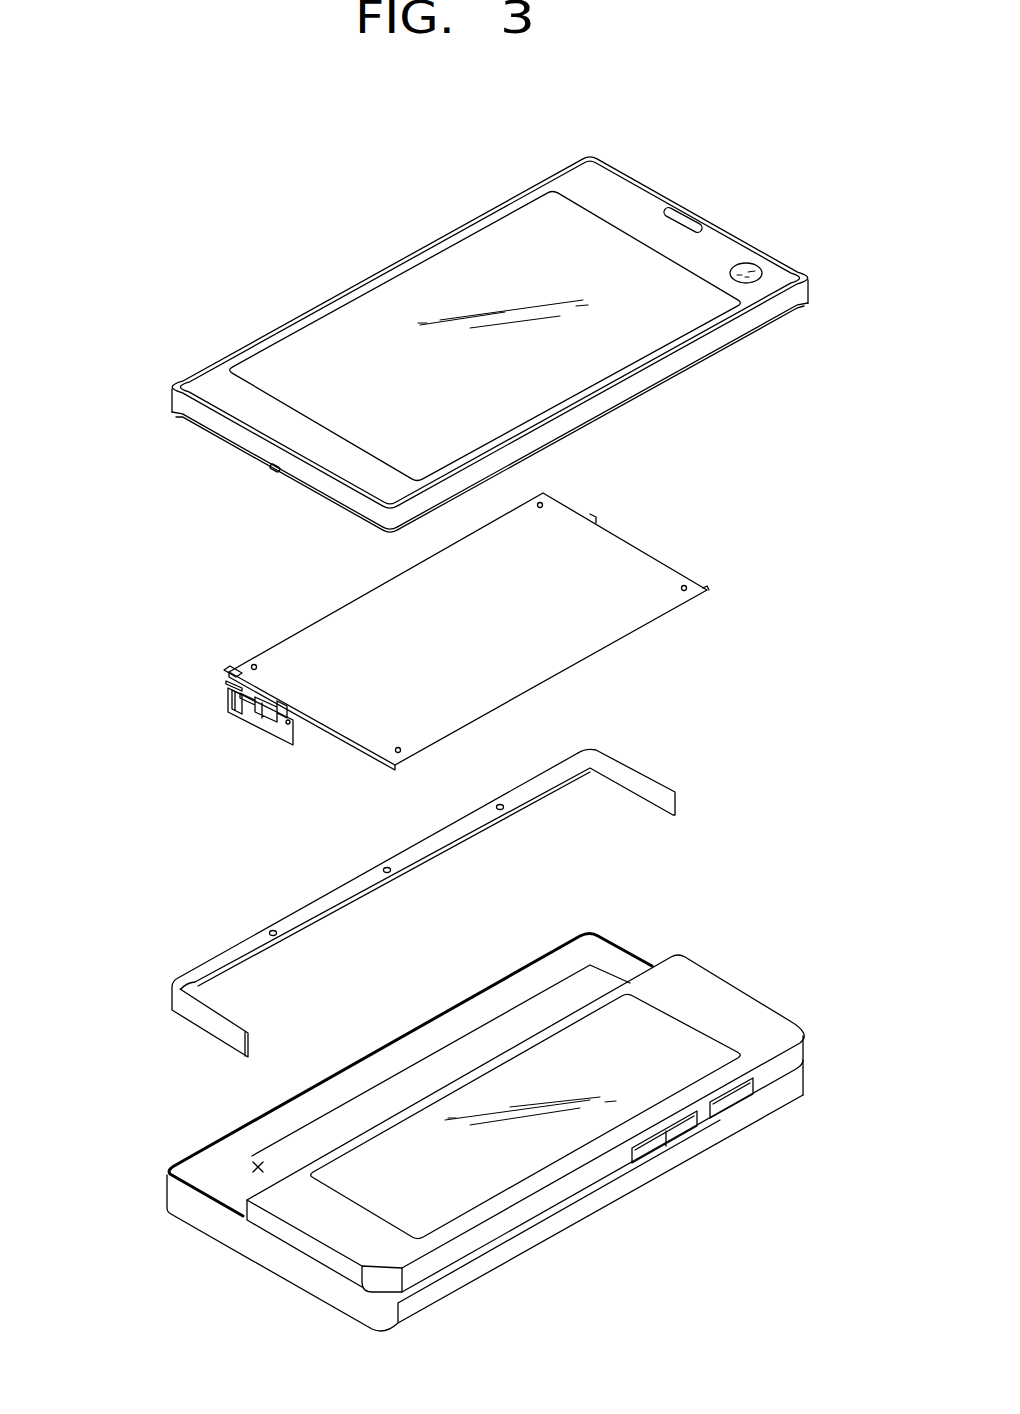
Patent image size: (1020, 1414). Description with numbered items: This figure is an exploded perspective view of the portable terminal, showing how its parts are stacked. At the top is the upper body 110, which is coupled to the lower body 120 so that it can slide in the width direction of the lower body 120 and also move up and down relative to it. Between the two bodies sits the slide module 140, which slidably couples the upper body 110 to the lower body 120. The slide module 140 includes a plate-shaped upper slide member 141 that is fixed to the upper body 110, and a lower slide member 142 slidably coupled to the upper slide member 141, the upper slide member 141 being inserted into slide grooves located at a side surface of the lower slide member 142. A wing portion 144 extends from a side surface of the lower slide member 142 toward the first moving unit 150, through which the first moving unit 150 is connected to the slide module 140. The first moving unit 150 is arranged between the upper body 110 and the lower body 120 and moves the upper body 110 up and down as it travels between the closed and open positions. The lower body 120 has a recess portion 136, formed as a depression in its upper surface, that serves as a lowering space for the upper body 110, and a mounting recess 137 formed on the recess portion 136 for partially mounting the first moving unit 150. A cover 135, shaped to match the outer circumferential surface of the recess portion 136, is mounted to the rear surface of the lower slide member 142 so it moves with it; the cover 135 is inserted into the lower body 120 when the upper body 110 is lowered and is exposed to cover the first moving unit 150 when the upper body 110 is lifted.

The upper body 110 is at (723, 210).
The lower body 120 is at (757, 985).
The cover 135 is at (228, 948).
The recess portion 136 is at (633, 943).
The mounting recess 137 is at (258, 1166).
The slide module 140 is at (687, 567).
The upper slide member 141 is at (607, 552).
The lower slide member 142 is at (240, 671).
The wing portion 144 is at (233, 686).
The first moving unit 150 is at (247, 737).